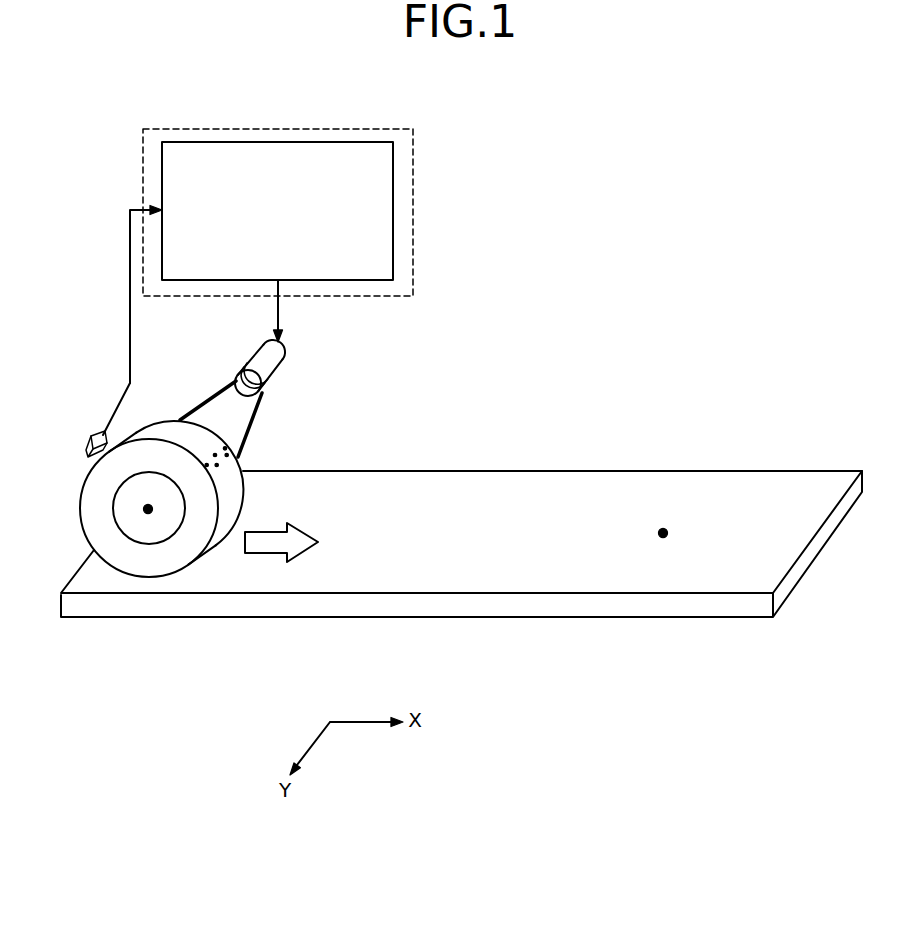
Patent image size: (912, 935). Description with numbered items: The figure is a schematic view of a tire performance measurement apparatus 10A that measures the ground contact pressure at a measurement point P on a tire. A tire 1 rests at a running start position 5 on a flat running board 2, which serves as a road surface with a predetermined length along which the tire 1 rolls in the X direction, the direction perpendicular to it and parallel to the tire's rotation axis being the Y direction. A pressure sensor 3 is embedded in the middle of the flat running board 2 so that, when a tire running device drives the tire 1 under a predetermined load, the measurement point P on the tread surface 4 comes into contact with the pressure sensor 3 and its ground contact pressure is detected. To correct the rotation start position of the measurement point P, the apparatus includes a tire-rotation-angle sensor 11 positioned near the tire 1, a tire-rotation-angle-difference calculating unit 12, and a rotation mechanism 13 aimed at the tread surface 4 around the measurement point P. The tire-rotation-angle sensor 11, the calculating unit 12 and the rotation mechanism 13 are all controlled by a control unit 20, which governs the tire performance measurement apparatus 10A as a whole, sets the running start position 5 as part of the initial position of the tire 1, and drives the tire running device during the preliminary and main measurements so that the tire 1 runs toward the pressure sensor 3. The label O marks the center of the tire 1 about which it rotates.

The tire 1 is at (70, 492).
The flat running board 2 is at (440, 456).
The pressure sensor 3 is at (663, 533).
The tread surface 4 is at (167, 437).
The running start position 5 is at (129, 590).
The tire performance measurement apparatus 10A is at (631, 282).
The tire-rotation-angle sensor 11 is at (100, 432).
The tire-rotation-angle-difference calculating unit 12 is at (394, 215).
The rotation mechanism 13 is at (272, 360).
The control unit 20 is at (349, 128).
The tire rotation center O is at (157, 499).
The measurement point P is at (242, 458).